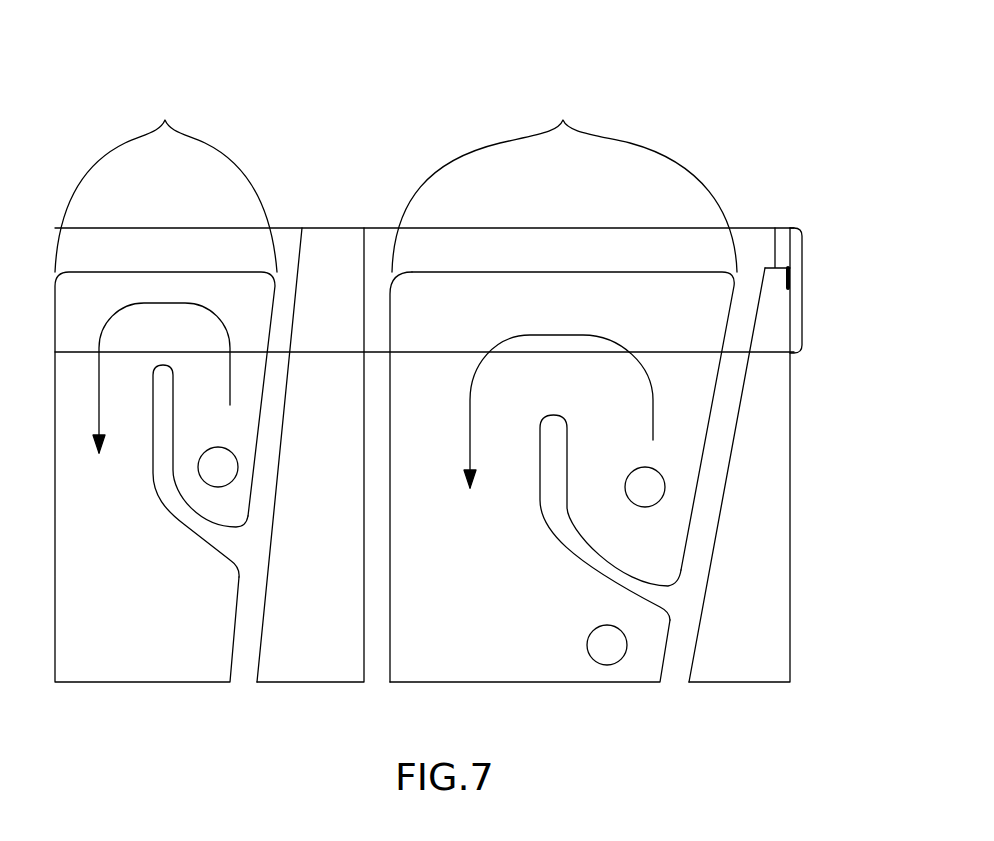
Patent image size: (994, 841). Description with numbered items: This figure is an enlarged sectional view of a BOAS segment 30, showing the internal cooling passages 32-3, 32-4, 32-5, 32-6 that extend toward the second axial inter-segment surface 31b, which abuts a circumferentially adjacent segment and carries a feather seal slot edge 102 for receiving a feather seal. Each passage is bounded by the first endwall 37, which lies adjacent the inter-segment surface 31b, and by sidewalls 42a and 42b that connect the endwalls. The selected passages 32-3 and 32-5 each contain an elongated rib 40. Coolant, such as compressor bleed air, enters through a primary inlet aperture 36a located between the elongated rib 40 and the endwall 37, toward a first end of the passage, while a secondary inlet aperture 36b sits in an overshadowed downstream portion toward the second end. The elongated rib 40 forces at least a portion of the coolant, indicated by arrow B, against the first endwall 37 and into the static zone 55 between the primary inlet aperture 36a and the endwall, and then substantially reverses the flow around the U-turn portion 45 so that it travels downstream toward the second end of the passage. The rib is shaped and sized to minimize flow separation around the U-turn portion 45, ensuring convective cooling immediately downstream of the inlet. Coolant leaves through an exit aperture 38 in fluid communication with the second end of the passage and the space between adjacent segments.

The BOAS segment 30 is at (683, 100).
The second axial inter-segment surface 31b is at (165, 235).
The feather seal slot edge 102 is at (445, 352).
The U-turn portion 45 is at (396, 183).
The first endwall 37 is at (216, 259).
The internal cooling passage 32-3 is at (118, 641).
The internal cooling passage 32-4 is at (293, 641).
The internal cooling passage 32-5 is at (435, 641).
The internal cooling passage 32-6 is at (725, 641).
The elongated rib 40 is at (180, 518).
The sidewall 42a is at (273, 413).
The sidewall 42b is at (383, 547).
The exit aperture 38 is at (783, 228).
The static zone 55 is at (803, 290).
The primary inlet aperture 36a is at (214, 447).
The secondary inlet aperture 36b is at (588, 646).
The coolant flow arrow B is at (110, 315).